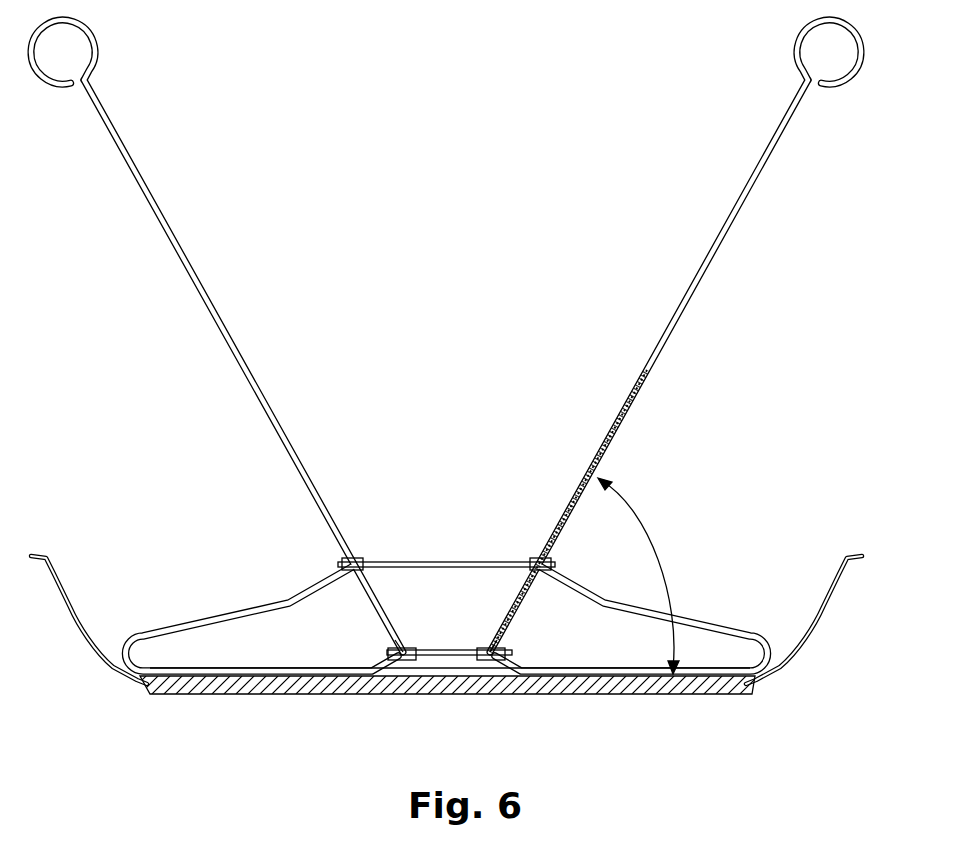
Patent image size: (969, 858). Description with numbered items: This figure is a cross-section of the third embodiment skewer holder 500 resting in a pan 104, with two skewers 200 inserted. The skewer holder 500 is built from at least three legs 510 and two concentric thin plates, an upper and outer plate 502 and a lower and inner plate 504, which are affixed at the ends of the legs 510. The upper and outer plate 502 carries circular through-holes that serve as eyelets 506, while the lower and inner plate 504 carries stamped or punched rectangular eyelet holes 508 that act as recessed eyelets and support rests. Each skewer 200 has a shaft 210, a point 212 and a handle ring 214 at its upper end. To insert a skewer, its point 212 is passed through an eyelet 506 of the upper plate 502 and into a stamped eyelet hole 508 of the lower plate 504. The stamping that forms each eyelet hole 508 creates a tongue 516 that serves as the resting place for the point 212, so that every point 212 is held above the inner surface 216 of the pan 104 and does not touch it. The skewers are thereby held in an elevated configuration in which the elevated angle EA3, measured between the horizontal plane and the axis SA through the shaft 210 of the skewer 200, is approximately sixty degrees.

The pan 104 is at (833, 553).
The skewer 200 is at (450, 336).
The shaft 210 is at (207, 304).
The point 212 is at (406, 648).
The handle ring 214 is at (90, 78).
The inner surface 216 is at (712, 674).
The skewer holder 500 is at (479, 196).
The upper and outer plate 502 is at (450, 562).
The lower and inner plate 504 is at (450, 650).
The eyelets 506 is at (357, 561).
The stamped eyelet holes 508 is at (396, 648).
The legs 510 is at (220, 612).
The tongue 516 is at (403, 660).
The shaft axis SA is at (605, 433).
The elevated angle EA3 is at (650, 538).